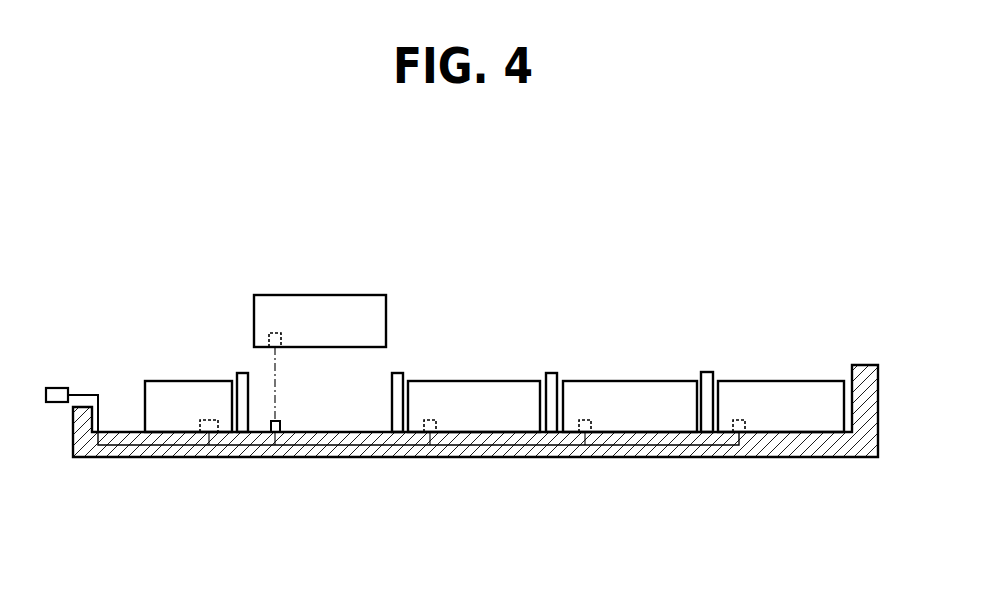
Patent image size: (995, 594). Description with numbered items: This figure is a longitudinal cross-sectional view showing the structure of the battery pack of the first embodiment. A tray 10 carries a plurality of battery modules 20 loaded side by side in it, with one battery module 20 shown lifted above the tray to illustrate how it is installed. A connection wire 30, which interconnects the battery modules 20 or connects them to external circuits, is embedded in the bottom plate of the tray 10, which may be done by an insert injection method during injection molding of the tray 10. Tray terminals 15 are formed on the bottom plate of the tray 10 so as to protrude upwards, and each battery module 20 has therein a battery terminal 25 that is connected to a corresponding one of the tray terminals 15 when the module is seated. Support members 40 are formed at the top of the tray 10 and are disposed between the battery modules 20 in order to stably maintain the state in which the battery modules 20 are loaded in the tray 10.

The tray 10 is at (328, 460).
The tray terminals 15 is at (271, 432).
The battery modules 20 is at (446, 373).
The battery terminal 25 is at (270, 340).
The connection wire 30 is at (525, 445).
The support members 40 is at (700, 373).